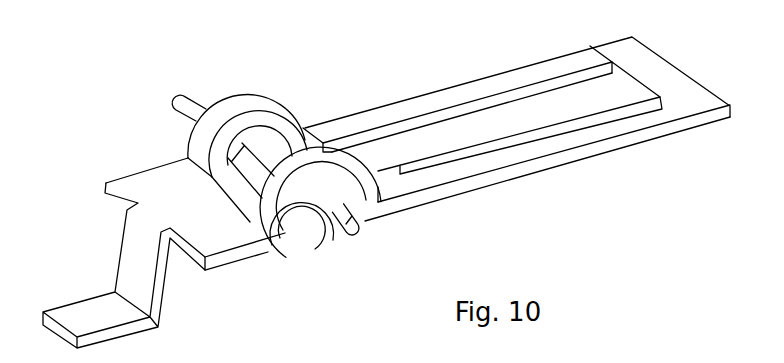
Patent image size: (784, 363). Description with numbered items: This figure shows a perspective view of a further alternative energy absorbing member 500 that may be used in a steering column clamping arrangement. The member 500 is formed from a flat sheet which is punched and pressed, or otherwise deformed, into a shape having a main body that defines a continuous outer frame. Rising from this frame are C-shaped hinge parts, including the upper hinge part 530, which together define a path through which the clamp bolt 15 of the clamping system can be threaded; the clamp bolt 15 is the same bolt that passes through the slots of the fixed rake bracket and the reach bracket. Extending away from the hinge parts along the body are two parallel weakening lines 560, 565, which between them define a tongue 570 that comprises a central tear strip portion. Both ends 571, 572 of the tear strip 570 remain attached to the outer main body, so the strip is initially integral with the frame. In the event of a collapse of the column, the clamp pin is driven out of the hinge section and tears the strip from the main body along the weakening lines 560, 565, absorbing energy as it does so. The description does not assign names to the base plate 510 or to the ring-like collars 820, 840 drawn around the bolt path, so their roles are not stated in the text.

The energy absorbing member 500 is at (567, 180).
The base plate 510 is at (135, 176).
The clamp bolt 15 is at (197, 114).
The rear ring 820 is at (272, 102).
The front ring 840 is at (305, 265).
The upper hinge part 530 is at (322, 135).
The weakening line 560 is at (465, 102).
The tongue 570 is at (547, 88).
The end of the tear strip 571 is at (250, 178).
The end of the tear strip 572 is at (637, 85).
The weakening line 565 is at (637, 122).